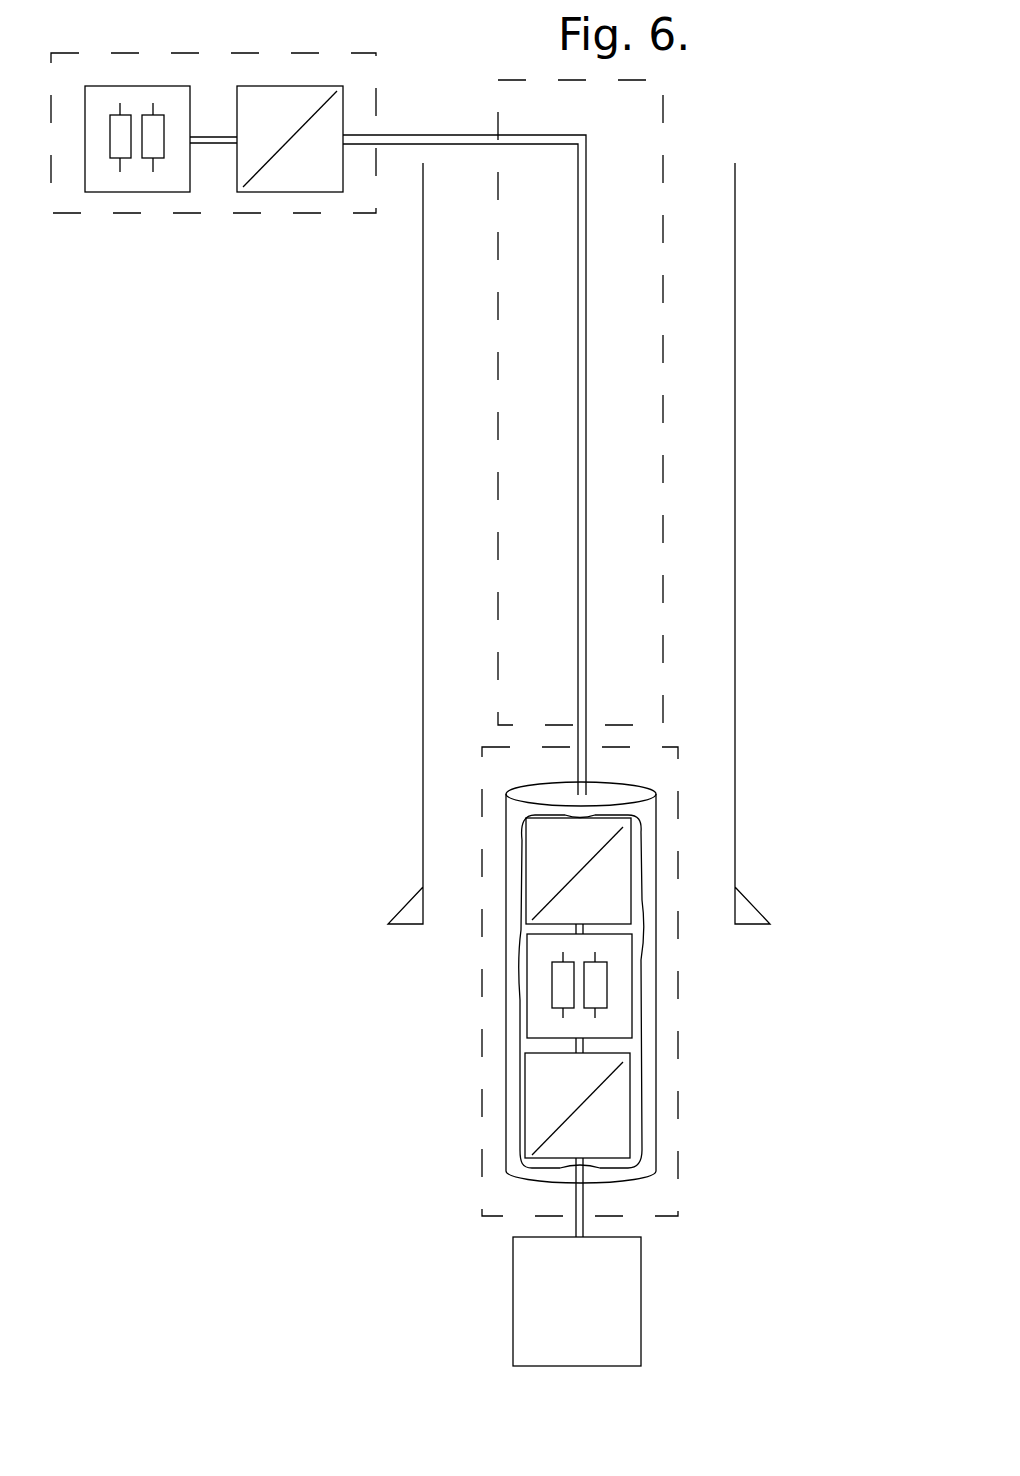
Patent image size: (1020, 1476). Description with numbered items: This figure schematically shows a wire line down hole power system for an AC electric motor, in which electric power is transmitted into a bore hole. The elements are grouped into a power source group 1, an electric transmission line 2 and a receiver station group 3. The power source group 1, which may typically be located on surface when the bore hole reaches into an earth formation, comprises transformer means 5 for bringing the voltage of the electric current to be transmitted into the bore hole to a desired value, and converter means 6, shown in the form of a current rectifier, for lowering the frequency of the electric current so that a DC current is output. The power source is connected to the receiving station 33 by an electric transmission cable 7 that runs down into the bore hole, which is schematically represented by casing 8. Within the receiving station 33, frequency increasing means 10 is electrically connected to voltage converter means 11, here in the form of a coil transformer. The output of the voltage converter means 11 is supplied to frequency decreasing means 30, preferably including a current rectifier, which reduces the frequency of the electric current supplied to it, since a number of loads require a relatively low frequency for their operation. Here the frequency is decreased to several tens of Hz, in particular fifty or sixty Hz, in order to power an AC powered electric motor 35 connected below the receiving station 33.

The power source group 1 is at (377, 79).
The electric transmission line 2 is at (663, 127).
The receiver station group 3 is at (482, 758).
The transformer means 5 is at (137, 193).
The converter means 6 is at (283, 193).
The electric transmission cable 7 is at (586, 255).
The casing 8 is at (735, 282).
The frequency increasing means 10 is at (526, 872).
The voltage converter means 11 is at (527, 980).
The frequency decreasing means 30 is at (525, 1110).
The receiving station 33 is at (656, 988).
The AC powered electric motor 35 is at (641, 1293).